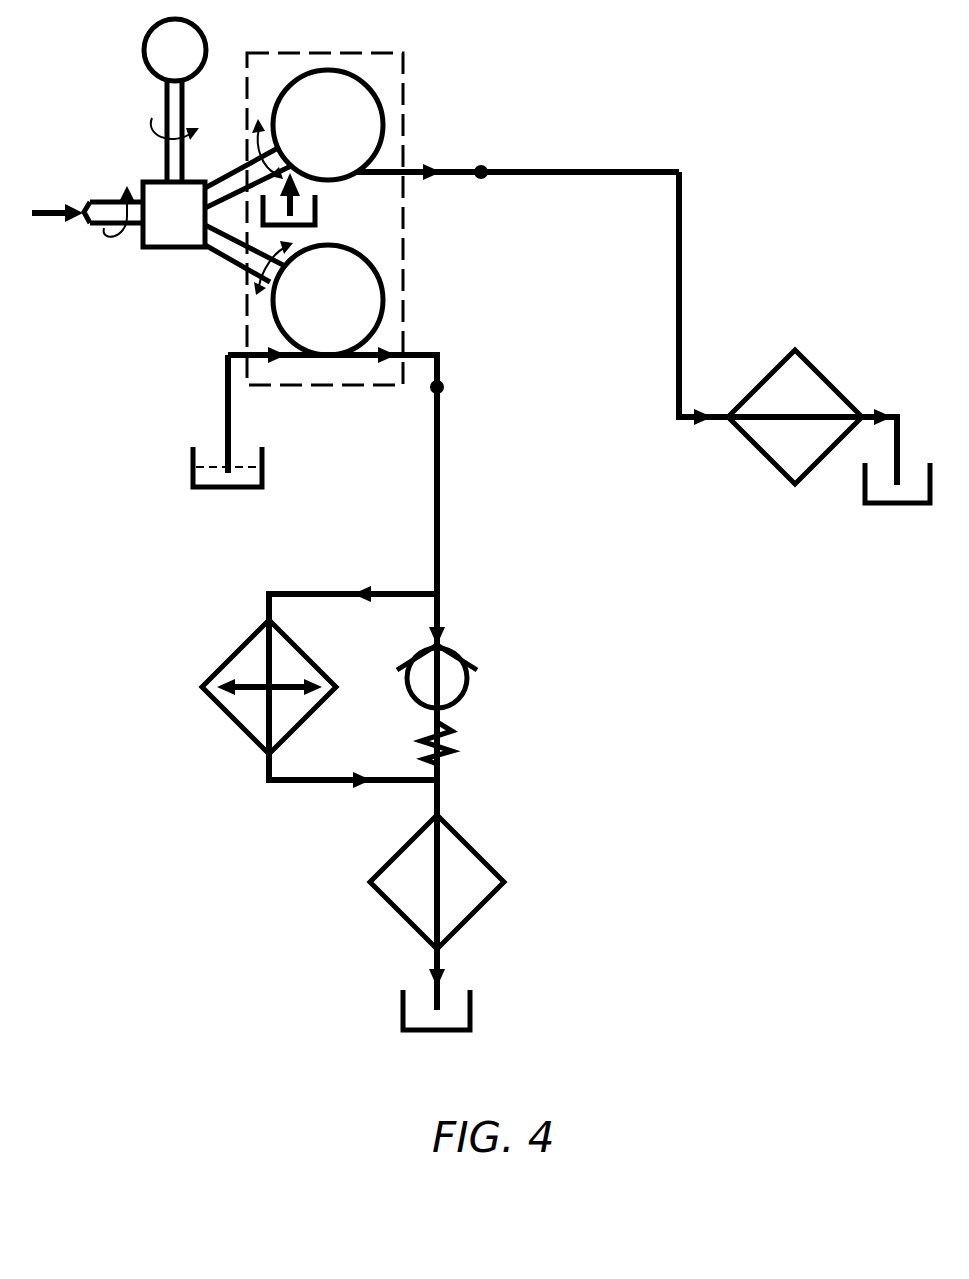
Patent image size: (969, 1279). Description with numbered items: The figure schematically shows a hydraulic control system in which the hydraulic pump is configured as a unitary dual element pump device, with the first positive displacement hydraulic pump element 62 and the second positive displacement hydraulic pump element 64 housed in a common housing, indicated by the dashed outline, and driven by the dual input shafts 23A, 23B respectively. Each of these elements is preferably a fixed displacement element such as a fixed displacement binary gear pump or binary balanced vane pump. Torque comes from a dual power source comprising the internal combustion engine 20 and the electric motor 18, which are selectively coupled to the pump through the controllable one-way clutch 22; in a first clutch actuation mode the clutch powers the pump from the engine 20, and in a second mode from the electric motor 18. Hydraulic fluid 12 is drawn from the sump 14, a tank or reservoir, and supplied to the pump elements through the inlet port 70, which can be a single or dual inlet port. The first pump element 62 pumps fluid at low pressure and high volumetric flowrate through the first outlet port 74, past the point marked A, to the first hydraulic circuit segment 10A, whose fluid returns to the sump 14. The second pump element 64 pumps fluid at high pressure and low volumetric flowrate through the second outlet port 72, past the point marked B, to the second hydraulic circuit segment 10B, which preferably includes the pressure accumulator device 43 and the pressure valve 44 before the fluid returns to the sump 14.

The first hydraulic circuit segment 10A is at (823, 377).
The second hydraulic circuit segment 10B is at (471, 848).
The hydraulic fluid 12 is at (245, 462).
The sump 14 is at (263, 212).
The electric motor 18 is at (145, 50).
The internal combustion engine 20 is at (70, 201).
The controllable one-way clutch 22 is at (152, 182).
The first input shaft 23A is at (238, 170).
The second input shaft 23B is at (240, 244).
The pressure accumulator device 43 is at (235, 653).
The pressure valve 44 is at (466, 650).
The first positive displacement hydraulic pump element 62 is at (345, 141).
The second positive displacement hydraulic pump element 64 is at (345, 316).
The inlet port 70 is at (298, 177).
The second outlet port 72 is at (373, 350).
The first outlet port 74 is at (412, 170).
The junction point A is at (481, 168).
The junction point B is at (445, 386).